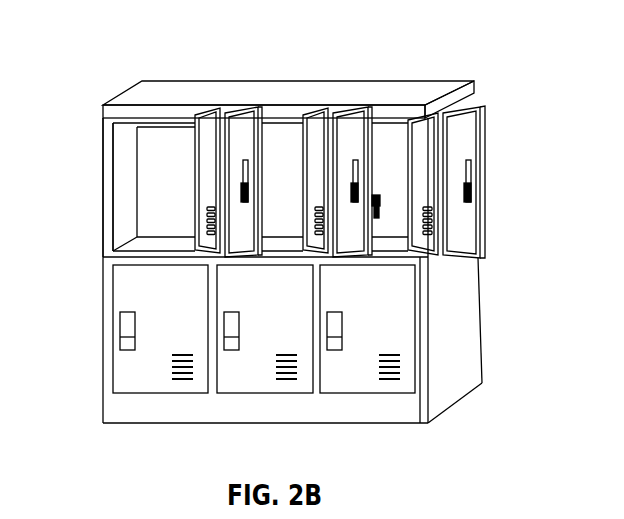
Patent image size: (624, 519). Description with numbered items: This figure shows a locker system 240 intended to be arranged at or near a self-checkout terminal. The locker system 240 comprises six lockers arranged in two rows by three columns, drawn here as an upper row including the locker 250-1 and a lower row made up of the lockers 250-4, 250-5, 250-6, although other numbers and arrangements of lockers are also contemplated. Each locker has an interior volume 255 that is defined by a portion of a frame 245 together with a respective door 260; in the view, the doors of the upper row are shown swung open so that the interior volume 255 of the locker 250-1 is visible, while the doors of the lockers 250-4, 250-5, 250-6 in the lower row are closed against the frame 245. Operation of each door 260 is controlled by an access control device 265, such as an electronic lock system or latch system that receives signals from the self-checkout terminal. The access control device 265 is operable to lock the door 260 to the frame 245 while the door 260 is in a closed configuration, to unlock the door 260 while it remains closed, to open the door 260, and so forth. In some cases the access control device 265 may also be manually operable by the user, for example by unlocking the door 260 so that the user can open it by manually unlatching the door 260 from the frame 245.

The locker system 240 is at (456, 42).
The frame 245 is at (450, 383).
The locker 250-1 is at (118, 141).
The locker 250-4 is at (147, 378).
The locker 250-5 is at (251, 378).
The locker 250-6 is at (358, 380).
The interior volume 255 is at (155, 167).
The door 260 is at (261, 130).
The access control device 265 is at (248, 162).